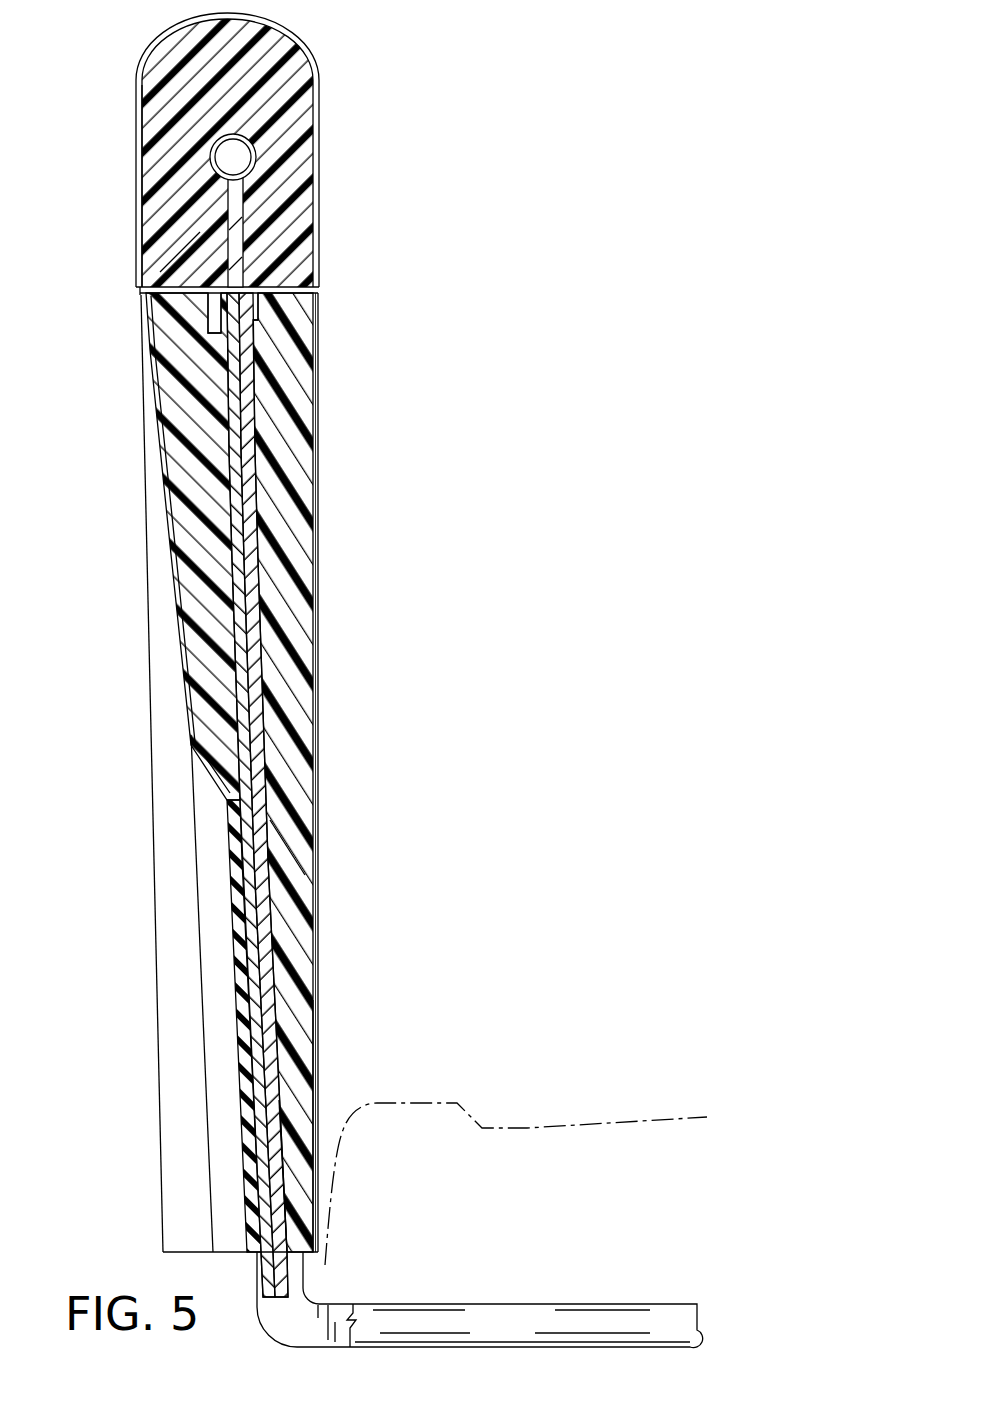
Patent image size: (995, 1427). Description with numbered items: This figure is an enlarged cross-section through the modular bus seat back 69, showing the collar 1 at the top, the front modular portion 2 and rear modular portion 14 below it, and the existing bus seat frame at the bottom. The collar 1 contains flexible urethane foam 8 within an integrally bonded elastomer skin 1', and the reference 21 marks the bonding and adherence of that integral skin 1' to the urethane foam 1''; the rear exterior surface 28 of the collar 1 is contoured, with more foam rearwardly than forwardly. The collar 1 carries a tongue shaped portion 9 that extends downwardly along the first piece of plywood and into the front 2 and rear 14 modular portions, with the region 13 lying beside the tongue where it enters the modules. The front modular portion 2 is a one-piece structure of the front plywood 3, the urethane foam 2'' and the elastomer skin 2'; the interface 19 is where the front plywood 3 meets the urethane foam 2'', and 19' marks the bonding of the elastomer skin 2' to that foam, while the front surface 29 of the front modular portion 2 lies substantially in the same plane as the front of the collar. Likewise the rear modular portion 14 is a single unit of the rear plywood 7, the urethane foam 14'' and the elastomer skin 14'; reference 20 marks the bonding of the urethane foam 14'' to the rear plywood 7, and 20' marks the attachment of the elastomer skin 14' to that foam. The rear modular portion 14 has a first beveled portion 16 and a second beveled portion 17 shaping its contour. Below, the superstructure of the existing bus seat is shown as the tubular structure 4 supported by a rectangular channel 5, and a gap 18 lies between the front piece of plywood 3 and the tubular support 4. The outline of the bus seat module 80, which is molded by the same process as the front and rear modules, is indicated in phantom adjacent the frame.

The modular bus seat back 69 is at (123, 42).
The collar 1 is at (271, 153).
The elastomer skin 1' is at (366, 183).
The urethane foam 1'' is at (275, 153).
The tubular structure 4 is at (212, 158).
The bonding of integral skin to urethane foam 21 is at (138, 192).
The rear exterior surface 28 is at (140, 218).
The gap 18 is at (237, 185).
The urethane foam 8 is at (183, 252).
The left slot 13 is at (215, 322).
The tongue shaped portion 9 is at (255, 315).
The rear plywood 7 is at (230, 400).
The front plywood 3 is at (247, 425).
The rear modular portion 14 is at (143, 546).
The elastomer skin 14' is at (138, 544).
The urethane foam 14'' is at (146, 647).
The elastomer skin 2' is at (356, 772).
The front surface 29 is at (317, 695).
The front modular portion 2 is at (326, 772).
The urethane foam 2'' is at (326, 858).
The first beveled portion 16 is at (215, 890).
The second beveled portion 17 is at (163, 955).
The attachment of elastomer skin to urethane foam 20' is at (173, 1026).
The attachment of urethane foam to rear plywood 20 is at (191, 1188).
The bonding of elastomer skin to urethane foam 19' is at (360, 1126).
The interface 19 is at (350, 1176).
The bus seat module 80 is at (507, 1117).
The rectangular channel 5 is at (303, 1310).